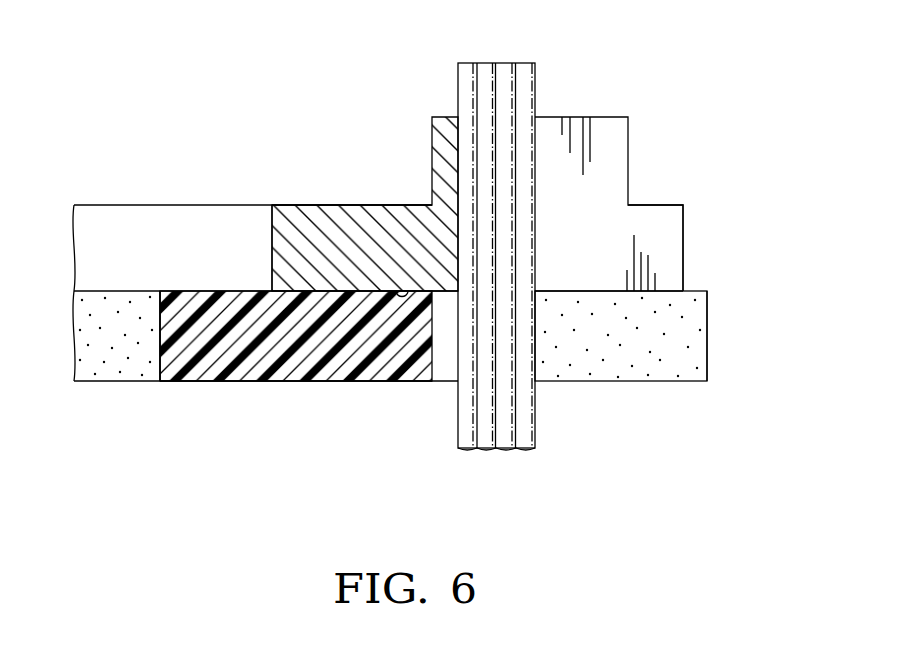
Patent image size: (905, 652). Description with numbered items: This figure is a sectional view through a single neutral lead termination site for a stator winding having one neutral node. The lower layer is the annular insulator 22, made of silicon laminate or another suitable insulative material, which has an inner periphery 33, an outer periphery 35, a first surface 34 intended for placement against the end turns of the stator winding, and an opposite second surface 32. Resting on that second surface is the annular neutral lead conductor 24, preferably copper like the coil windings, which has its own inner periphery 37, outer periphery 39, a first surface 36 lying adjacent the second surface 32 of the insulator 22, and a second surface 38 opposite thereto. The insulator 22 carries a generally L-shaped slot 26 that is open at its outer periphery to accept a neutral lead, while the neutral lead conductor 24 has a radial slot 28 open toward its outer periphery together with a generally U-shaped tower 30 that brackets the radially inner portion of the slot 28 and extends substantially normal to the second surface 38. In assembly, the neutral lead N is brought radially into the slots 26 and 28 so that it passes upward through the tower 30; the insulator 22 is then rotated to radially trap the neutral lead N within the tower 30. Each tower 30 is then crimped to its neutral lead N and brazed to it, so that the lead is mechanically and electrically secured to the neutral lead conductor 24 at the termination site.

The neutral lead N is at (463, 93).
The insulator 22 is at (197, 378).
The neutral lead conductor 24 is at (313, 210).
The slot 26 is at (633, 363).
The radial slot 28 is at (605, 209).
The tower 30 is at (611, 117).
The second surface 32 is at (182, 291).
The inner periphery 33 is at (160, 343).
The first surface 34 is at (340, 381).
The outer periphery 35 is at (707, 333).
The first surface 36 is at (396, 292).
The inner periphery 37 is at (271, 223).
The second surface 38 is at (349, 205).
The outer periphery 39 is at (683, 240).